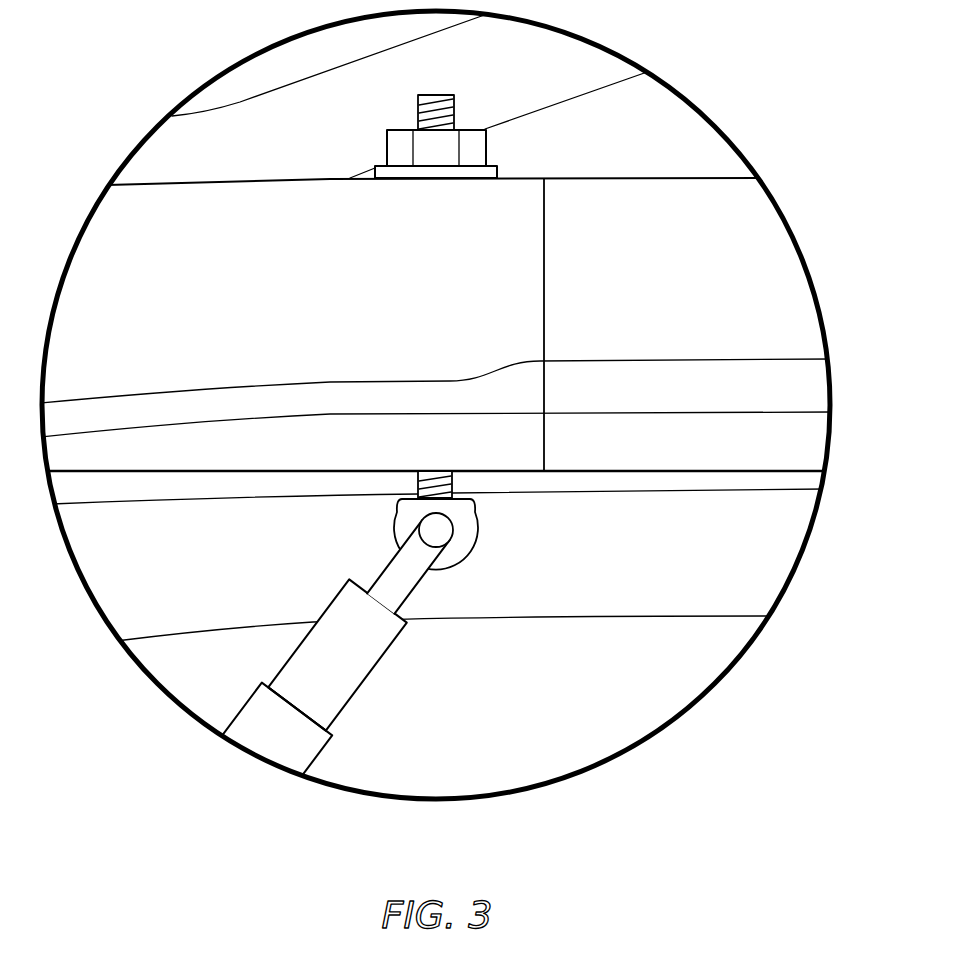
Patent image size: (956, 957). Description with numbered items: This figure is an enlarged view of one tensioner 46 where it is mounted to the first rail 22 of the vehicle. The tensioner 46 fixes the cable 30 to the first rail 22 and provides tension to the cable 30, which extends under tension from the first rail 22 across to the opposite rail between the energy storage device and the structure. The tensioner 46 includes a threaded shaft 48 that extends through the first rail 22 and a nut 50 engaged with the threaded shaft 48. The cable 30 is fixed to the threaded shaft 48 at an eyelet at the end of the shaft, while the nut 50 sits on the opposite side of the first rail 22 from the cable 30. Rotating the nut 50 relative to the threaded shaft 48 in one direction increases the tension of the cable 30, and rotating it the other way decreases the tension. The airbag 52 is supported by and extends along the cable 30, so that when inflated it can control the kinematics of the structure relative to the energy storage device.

The first rail 22 is at (652, 208).
The cable 30 is at (403, 568).
The tensioner 46 is at (481, 556).
The threaded shaft 48 is at (418, 115).
The nut 50 is at (486, 150).
The airbag 52 is at (337, 672).